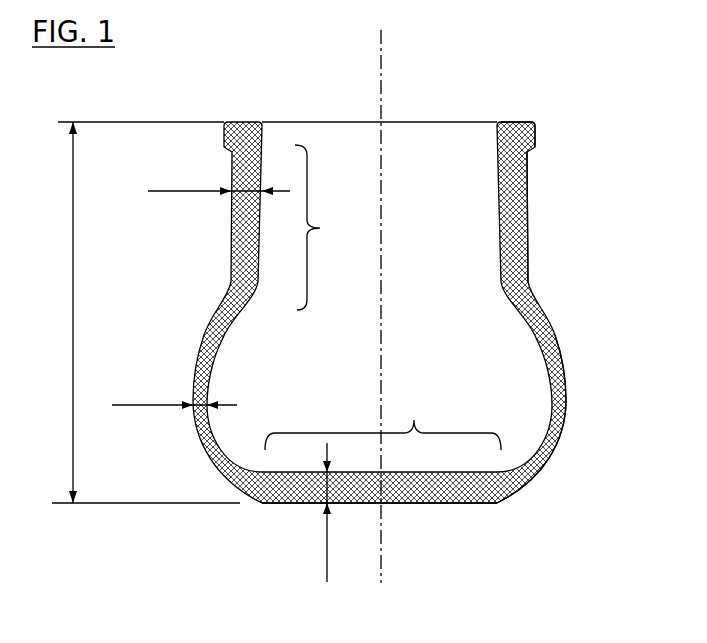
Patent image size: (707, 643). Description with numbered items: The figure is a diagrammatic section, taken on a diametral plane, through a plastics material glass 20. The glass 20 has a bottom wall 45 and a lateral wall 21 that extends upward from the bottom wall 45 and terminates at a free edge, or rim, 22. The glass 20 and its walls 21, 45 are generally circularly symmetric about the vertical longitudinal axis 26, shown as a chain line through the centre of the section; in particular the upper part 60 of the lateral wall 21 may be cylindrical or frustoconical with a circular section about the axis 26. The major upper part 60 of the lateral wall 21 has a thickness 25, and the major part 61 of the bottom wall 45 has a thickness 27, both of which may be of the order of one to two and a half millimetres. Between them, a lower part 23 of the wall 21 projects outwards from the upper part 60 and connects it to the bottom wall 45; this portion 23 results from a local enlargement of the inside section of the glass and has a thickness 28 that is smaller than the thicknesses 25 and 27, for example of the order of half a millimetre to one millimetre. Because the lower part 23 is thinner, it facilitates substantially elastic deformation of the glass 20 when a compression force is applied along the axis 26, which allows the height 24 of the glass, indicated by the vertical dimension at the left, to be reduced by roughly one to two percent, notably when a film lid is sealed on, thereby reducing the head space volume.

The glass 20 is at (610, 204).
The lateral wall 21 is at (529, 253).
The free edge 22 is at (524, 122).
The lower part of the wall 23 is at (586, 350).
The height 24 is at (271, 312).
The thickness 25 is at (219, 179).
The vertical longitudinal axis 26 is at (380, 67).
The thickness 27 is at (312, 512).
The thickness 28 is at (174, 393).
The bottom wall 45 is at (461, 503).
The upper part of the wall 60 is at (322, 227).
The major part of the bottom wall 61 is at (383, 421).